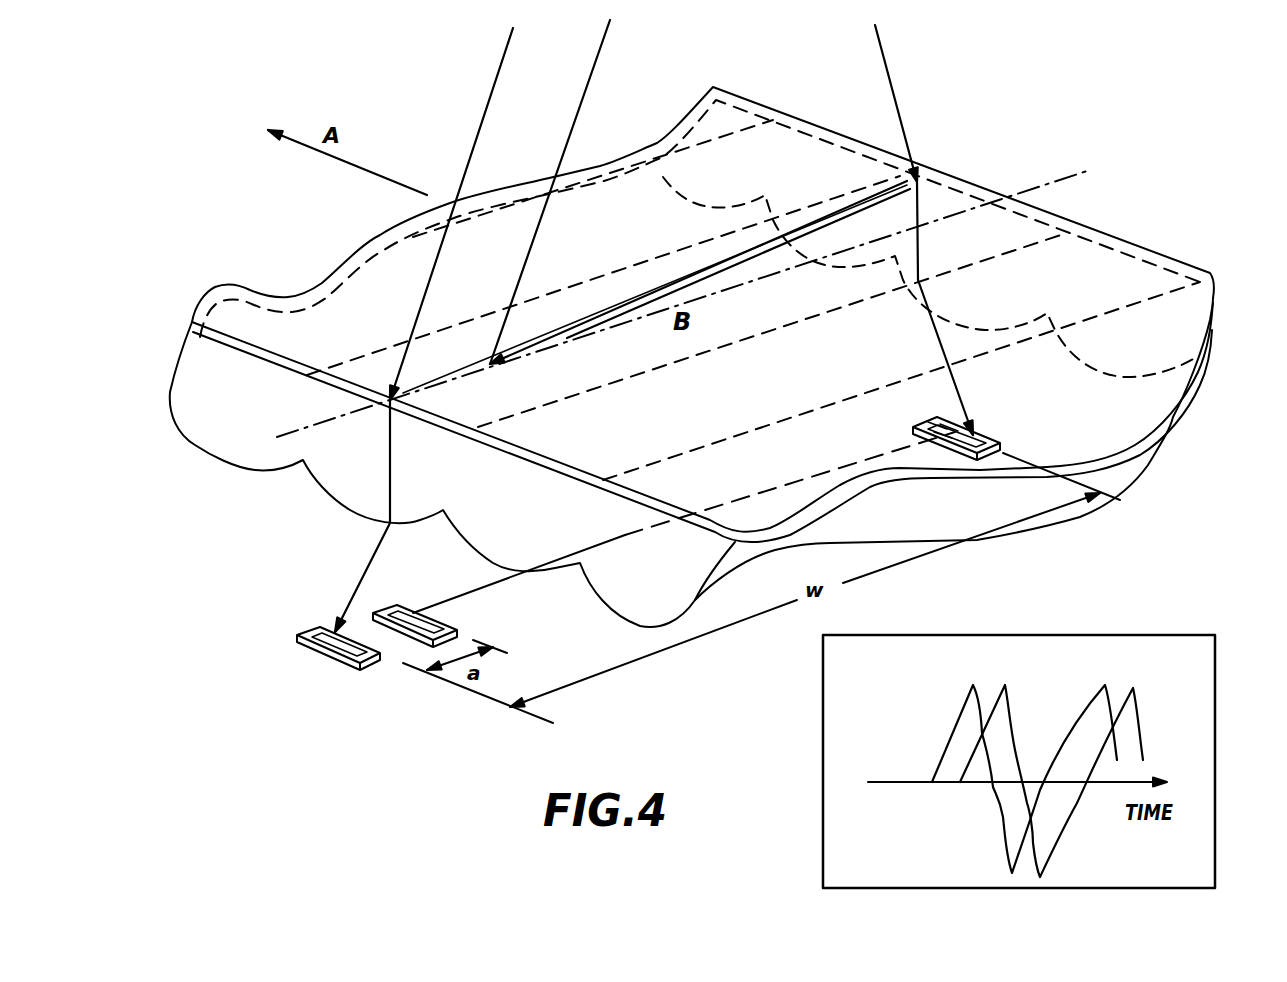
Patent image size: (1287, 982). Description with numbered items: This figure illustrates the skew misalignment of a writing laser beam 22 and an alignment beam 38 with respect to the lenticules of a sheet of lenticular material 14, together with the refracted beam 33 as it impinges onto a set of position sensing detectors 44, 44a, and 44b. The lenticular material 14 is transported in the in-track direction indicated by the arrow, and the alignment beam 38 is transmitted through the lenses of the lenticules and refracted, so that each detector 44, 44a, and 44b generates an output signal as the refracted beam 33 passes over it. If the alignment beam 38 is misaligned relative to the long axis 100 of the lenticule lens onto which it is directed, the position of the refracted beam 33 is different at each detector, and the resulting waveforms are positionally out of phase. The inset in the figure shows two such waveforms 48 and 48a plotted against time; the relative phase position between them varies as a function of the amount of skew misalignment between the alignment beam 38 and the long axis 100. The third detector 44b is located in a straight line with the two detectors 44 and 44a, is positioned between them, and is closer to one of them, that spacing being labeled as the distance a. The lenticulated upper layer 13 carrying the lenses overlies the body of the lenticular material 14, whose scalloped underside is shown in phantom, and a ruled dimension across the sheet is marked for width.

The skin panel 13 is at (1063, 273).
The lenticular material 14 is at (490, 523).
The writing laser beam 22 is at (585, 97).
The refracted beam 33 is at (355, 585).
The alignment beam 38 is at (477, 140).
The position sensing detector 44 is at (325, 657).
The position sensing detector 44a is at (930, 447).
The third detector 44b is at (403, 608).
The output signal waveform 48 is at (967, 698).
The output signal waveform 48a is at (1005, 683).
The long axis of lenticule 100 is at (1073, 173).